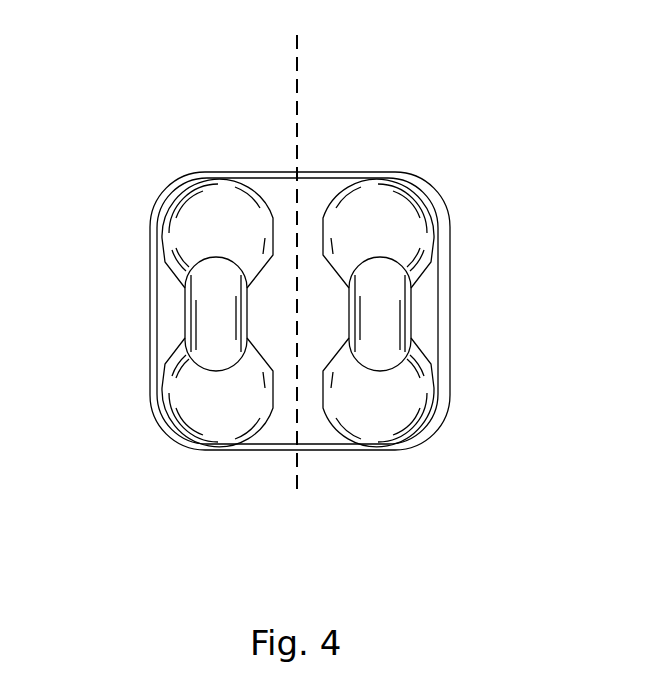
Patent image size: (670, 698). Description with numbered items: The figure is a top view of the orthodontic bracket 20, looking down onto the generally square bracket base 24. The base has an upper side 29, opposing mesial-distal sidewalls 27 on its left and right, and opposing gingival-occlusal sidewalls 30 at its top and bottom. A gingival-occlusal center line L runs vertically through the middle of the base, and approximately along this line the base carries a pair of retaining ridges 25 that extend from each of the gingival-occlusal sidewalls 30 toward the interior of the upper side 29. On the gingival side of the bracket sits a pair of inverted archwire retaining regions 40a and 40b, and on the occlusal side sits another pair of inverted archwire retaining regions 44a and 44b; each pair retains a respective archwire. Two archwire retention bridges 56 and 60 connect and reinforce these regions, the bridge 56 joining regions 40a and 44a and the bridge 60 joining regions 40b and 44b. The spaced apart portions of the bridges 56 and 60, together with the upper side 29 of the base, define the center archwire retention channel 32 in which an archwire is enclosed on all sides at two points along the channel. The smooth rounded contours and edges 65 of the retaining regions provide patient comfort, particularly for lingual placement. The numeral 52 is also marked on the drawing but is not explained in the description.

The bracket 20 is at (475, 157).
The bracket base 24 is at (263, 428).
The retaining ridges 25 is at (297, 237).
The mesial-distal sidewalls 27 is at (152, 302).
The upper side 29 is at (332, 192).
The gingival-occlusal sidewalls 30 is at (268, 172).
The center archwire retention channel 32 is at (265, 312).
The inverted archwire retaining region 40a is at (390, 391).
The inverted archwire retaining region 40b is at (204, 393).
The inverted archwire retaining region 44a is at (388, 208).
The inverted archwire retaining region 44b is at (205, 222).
The rim 52 is at (420, 328).
The archwire retention bridge 56 is at (380, 302).
The archwire retention bridge 60 is at (208, 303).
The smooth rounded contours and edges 65 is at (195, 178).
The line L is at (295, 80).